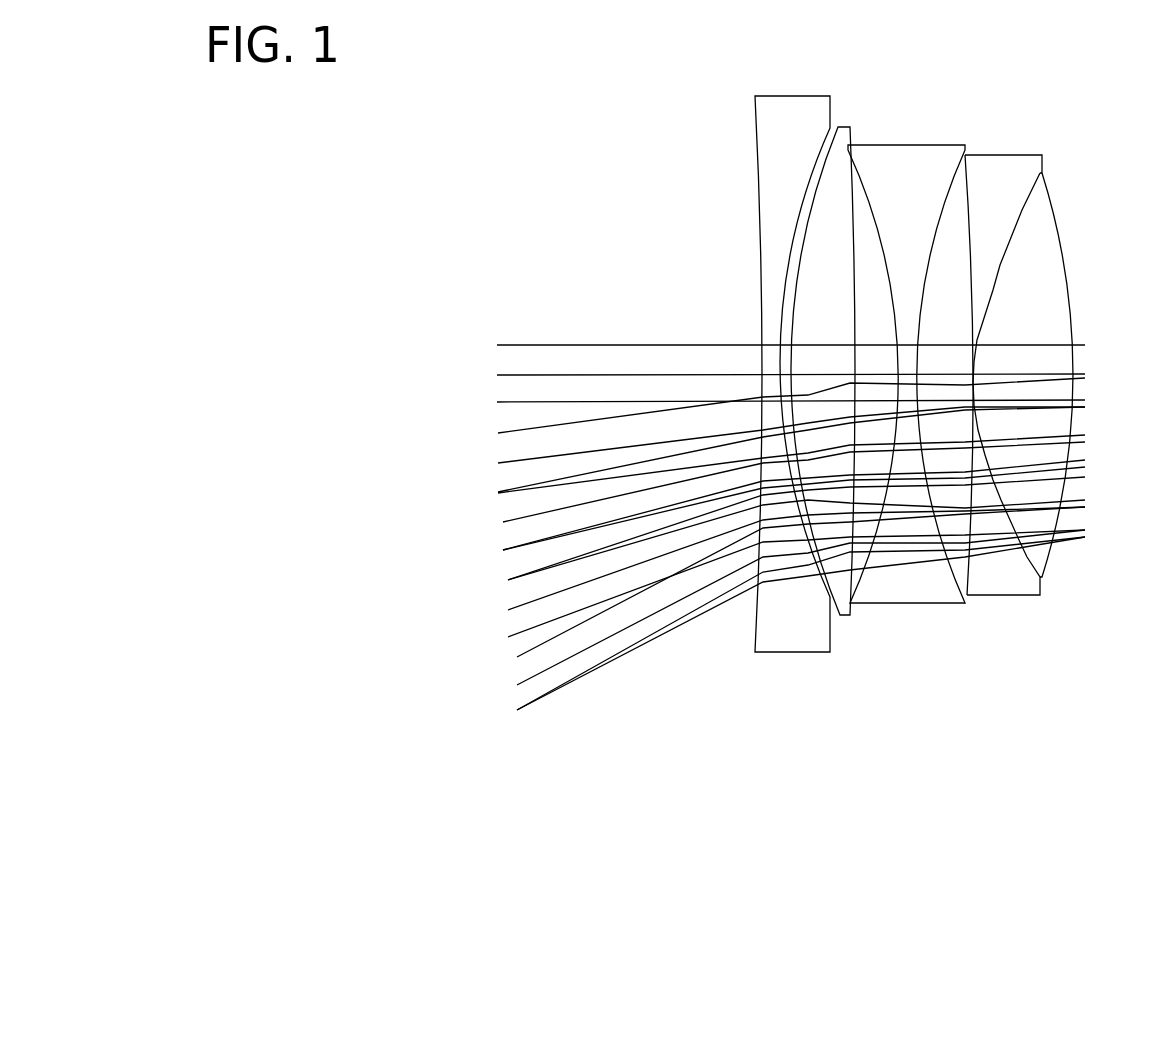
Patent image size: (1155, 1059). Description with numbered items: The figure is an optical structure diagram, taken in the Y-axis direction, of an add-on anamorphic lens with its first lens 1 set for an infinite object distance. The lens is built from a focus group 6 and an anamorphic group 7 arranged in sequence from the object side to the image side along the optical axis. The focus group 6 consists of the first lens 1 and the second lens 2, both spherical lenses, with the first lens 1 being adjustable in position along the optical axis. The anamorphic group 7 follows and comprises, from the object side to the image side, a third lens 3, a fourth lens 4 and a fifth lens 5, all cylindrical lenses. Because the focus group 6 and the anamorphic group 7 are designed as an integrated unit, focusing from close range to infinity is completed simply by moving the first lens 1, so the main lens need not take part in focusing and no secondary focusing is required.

The first lens 1 is at (783, 640).
The second lens 2 is at (847, 620).
The third lens 3 is at (910, 590).
The fourth lens 4 is at (993, 583).
The fifth lens 5 is at (1042, 575).
The focus group 6 is at (808, 501).
The anamorphic group 7 is at (989, 525).